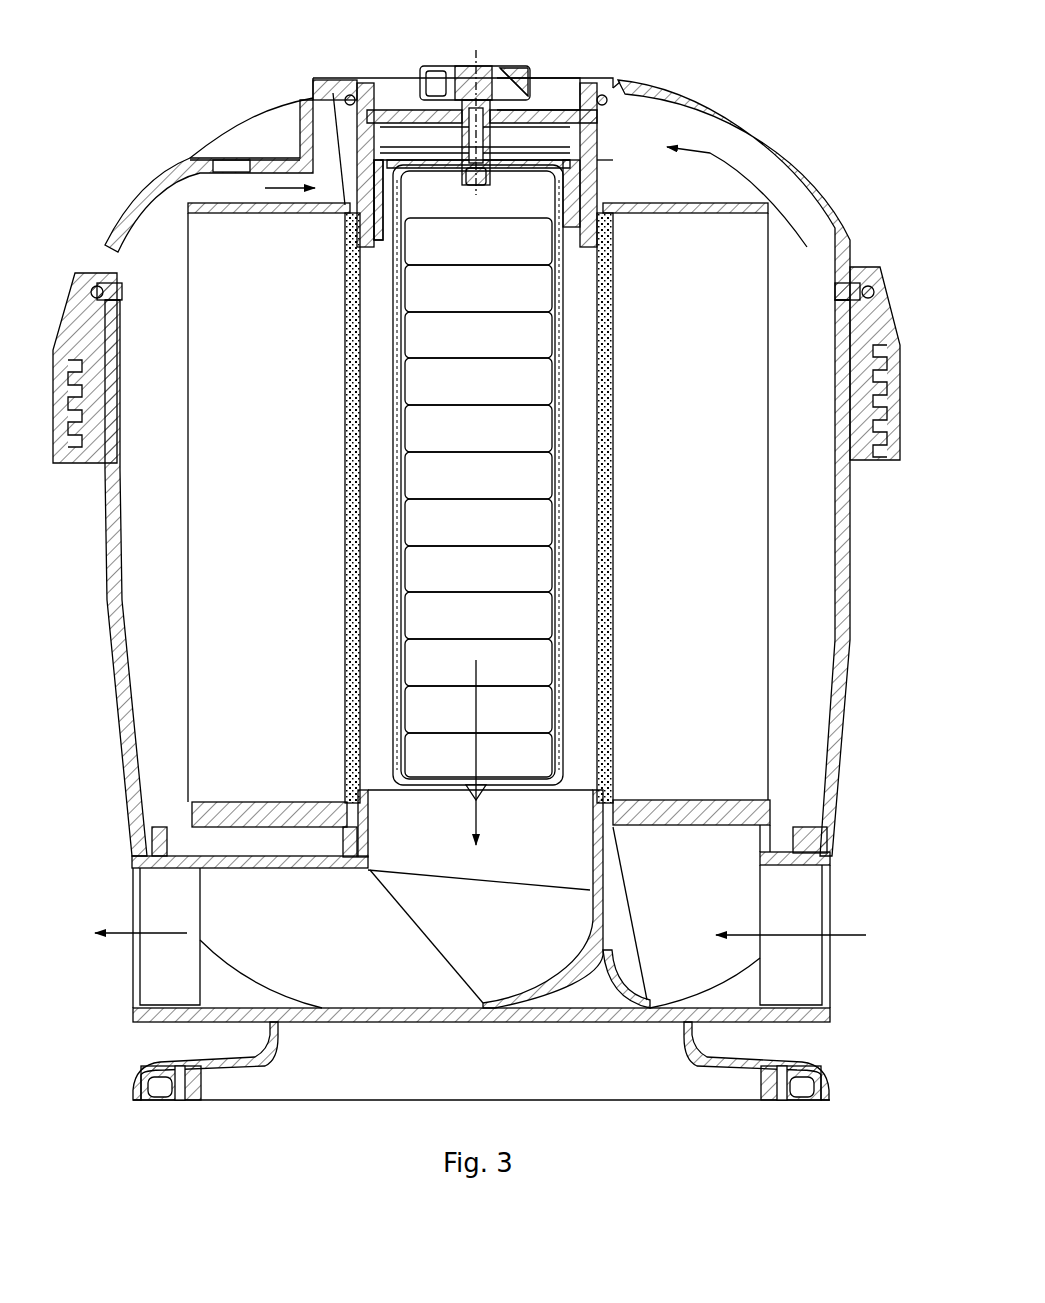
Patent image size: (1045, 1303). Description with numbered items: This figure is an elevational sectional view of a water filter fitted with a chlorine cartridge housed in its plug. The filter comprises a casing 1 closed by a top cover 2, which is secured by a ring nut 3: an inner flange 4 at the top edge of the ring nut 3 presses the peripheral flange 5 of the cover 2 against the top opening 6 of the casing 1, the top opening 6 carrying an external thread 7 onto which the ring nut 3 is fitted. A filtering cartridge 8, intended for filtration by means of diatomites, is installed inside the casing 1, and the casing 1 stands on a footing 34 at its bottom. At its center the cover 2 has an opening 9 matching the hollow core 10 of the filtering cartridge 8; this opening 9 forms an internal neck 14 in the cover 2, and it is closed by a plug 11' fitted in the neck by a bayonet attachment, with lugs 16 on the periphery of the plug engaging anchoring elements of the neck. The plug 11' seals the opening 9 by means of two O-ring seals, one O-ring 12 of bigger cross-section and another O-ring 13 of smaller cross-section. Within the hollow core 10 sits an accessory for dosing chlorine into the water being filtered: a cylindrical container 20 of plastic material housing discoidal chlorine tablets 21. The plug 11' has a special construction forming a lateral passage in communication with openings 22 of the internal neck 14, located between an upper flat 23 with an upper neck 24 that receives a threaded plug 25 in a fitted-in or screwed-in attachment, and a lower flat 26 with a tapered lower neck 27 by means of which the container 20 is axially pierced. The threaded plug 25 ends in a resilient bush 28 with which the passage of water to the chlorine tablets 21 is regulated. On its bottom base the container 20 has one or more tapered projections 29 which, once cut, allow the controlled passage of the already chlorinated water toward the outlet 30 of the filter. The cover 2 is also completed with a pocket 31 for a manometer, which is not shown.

The casing 1 is at (843, 583).
The top cover 2 is at (760, 157).
The ring nut 3 is at (890, 320).
The inner flange 4 is at (850, 267).
The peripheral flange 5 is at (97, 267).
The top opening 6 is at (878, 267).
The external thread 7 is at (900, 427).
The filtering cartridge 8 is at (617, 700).
The opening 9 is at (390, 77).
The hollow core 10 is at (347, 563).
The plug 11' is at (637, 51).
The O-ring 12 is at (352, 93).
The O-ring 13 is at (600, 165).
The internal neck 14 is at (270, 150).
The lug 16 is at (370, 222).
The cylindrical container 20 is at (560, 352).
The chlorine tablets 21 is at (530, 477).
The openings 22 is at (347, 113).
The upper flat 23 is at (543, 110).
The upper neck 24 is at (510, 83).
The threaded plug 25 is at (460, 63).
The lower flat 26 is at (517, 167).
The tapered lower neck 27 is at (473, 173).
The resilient bush 28 is at (490, 148).
The tapered projections 29 is at (473, 793).
The outlet 30 is at (160, 973).
The pocket 31 is at (240, 150).
The footing 34 is at (277, 1080).